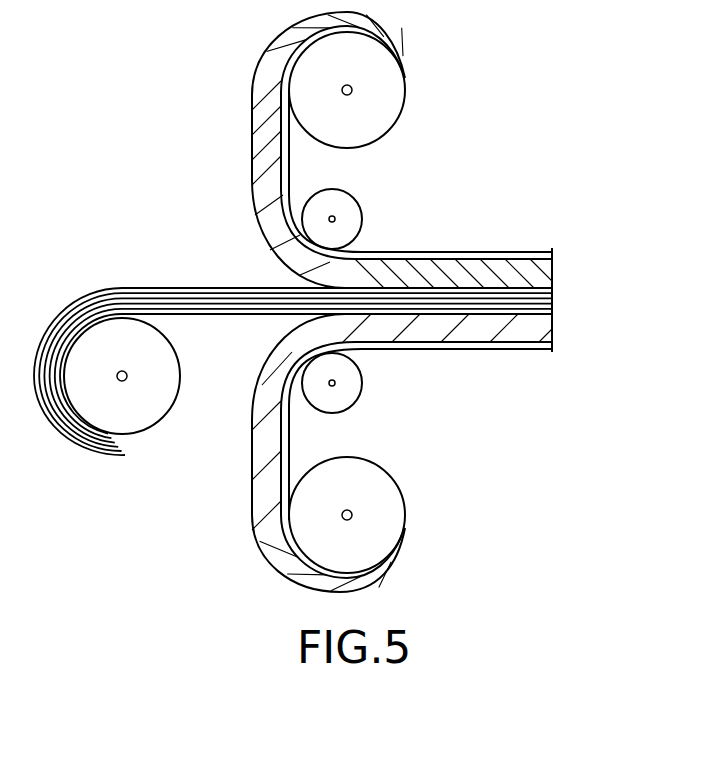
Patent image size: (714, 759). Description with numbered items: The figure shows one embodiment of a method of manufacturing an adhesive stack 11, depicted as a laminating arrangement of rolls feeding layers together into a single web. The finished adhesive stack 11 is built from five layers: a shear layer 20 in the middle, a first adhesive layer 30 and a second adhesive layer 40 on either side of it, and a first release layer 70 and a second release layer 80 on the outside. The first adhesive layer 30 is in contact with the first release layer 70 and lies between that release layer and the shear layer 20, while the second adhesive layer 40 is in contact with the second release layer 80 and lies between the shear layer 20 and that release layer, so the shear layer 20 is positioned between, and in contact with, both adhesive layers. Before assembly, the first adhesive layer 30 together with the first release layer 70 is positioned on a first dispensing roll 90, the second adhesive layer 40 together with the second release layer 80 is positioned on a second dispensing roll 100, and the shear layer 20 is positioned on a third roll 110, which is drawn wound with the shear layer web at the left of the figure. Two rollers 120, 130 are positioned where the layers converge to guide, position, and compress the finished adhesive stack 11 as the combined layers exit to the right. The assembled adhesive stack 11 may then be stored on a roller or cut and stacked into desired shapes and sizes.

The adhesive stack 11 is at (500, 201).
The shear layer 20 is at (546, 300).
The first adhesive layer 30 is at (546, 328).
The second adhesive layer 40 is at (546, 272).
The first release layer 70 is at (510, 250).
The second release layer 80 is at (517, 350).
The first dispensing roll 90 is at (404, 492).
The second dispensing roll 100 is at (405, 112).
The third roll 110 is at (105, 458).
The roller 120 is at (357, 403).
The roller 130 is at (357, 196).